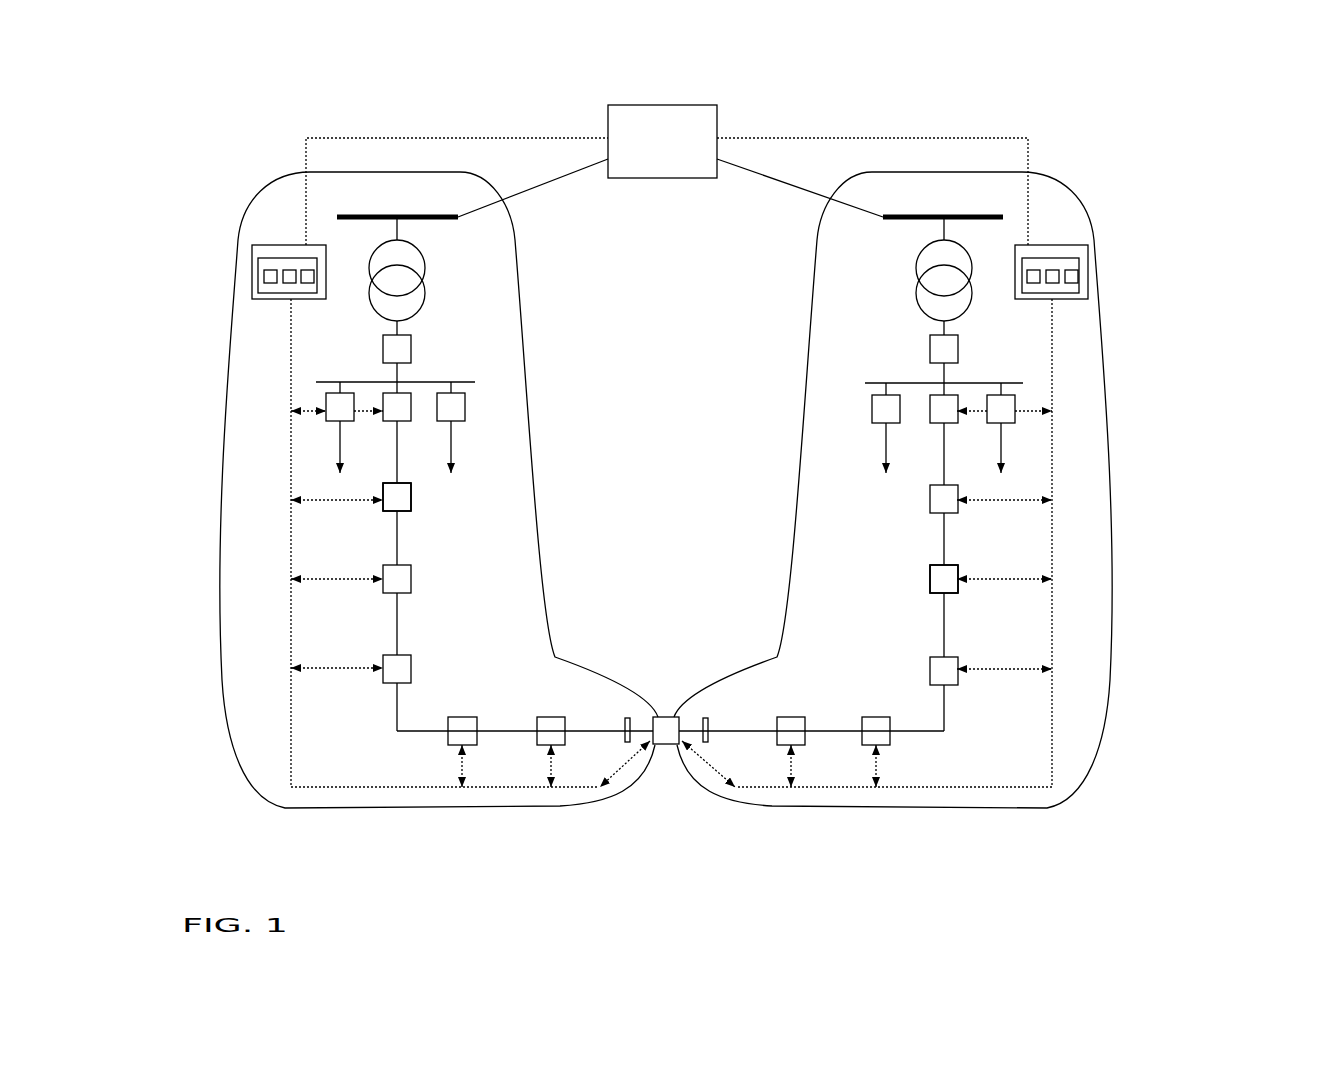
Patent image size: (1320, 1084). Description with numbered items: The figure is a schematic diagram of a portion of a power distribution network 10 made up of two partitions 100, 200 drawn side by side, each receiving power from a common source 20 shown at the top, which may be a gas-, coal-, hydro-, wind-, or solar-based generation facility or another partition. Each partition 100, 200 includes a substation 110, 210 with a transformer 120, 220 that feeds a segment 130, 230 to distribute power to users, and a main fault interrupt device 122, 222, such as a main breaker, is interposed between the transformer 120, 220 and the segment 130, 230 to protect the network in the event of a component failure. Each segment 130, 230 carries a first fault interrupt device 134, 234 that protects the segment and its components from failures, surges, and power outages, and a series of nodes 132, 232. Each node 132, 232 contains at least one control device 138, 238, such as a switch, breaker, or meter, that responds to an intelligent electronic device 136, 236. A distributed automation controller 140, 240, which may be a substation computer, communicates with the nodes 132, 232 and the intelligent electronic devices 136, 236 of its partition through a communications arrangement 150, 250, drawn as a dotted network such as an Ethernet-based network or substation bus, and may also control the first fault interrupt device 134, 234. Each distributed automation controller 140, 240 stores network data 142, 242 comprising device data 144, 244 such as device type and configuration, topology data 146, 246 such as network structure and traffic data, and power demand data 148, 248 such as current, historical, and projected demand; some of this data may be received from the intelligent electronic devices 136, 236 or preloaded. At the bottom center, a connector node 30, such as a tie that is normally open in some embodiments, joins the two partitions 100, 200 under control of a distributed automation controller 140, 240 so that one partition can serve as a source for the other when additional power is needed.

The power distribution network 10 is at (1203, 185).
The source 20 is at (673, 158).
The connector node 30 is at (660, 720).
The partition 100 is at (267, 187).
The substation 110 is at (418, 215).
The transformer 120 is at (425, 268).
The main fault interrupt device 122 is at (408, 343).
The segment 130 is at (373, 382).
The node 132 is at (412, 488).
The first fault interrupt device 134 is at (412, 398).
The intelligent electronic device 136 is at (387, 505).
The control device 138 is at (412, 503).
The distributed automation controller 140 is at (297, 247).
The network data 142 is at (257, 280).
The device data 144 is at (262, 268).
The topology data 146 is at (287, 270).
The power demand data 148 is at (303, 270).
The communications arrangement 150 is at (287, 462).
The partition 200 is at (1037, 177).
The substation 210 is at (912, 215).
The transformer 220 is at (915, 293).
The main fault interrupt device 222 is at (928, 347).
The segment 230 is at (922, 383).
The node 232 is at (930, 578).
The first fault interrupt device 234 is at (938, 416).
The intelligent electronic device 236 is at (957, 585).
The control device 238 is at (930, 585).
The distributed automation controller 240 is at (1037, 248).
The network data 242 is at (1080, 284).
The device data 244 is at (1078, 268).
The topology data 246 is at (1052, 272).
The power demand data 248 is at (1032, 272).
The communications arrangement 250 is at (1050, 462).